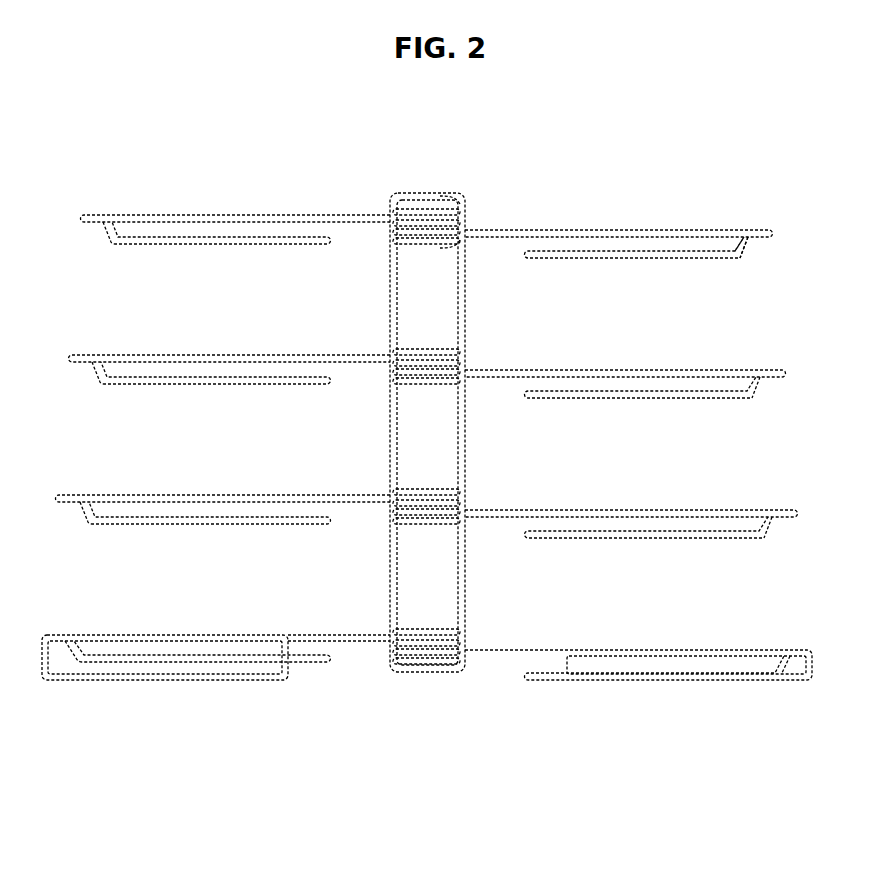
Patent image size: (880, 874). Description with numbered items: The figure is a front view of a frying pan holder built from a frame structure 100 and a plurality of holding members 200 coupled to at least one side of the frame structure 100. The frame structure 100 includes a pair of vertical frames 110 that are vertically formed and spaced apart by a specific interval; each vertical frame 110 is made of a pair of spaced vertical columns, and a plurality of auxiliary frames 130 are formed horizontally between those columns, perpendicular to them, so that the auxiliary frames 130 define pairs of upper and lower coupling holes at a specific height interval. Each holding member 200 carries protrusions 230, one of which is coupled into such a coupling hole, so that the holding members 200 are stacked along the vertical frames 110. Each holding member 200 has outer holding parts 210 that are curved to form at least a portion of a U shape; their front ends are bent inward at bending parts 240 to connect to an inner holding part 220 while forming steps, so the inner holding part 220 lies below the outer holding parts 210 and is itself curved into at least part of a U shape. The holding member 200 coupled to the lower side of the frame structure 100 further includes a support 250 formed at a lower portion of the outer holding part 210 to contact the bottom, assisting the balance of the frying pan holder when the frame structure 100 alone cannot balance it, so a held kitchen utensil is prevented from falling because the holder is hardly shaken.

The frame structure 100 is at (404, 181).
The vertical frame 110 is at (388, 595).
The auxiliary frame 130 is at (465, 630).
The holding member 200 is at (770, 203).
The outer holding part 210 is at (600, 230).
The inner holding part 220 is at (623, 262).
The protrusion 230 is at (455, 235).
The bending part 240 is at (746, 245).
The support 250 is at (740, 682).